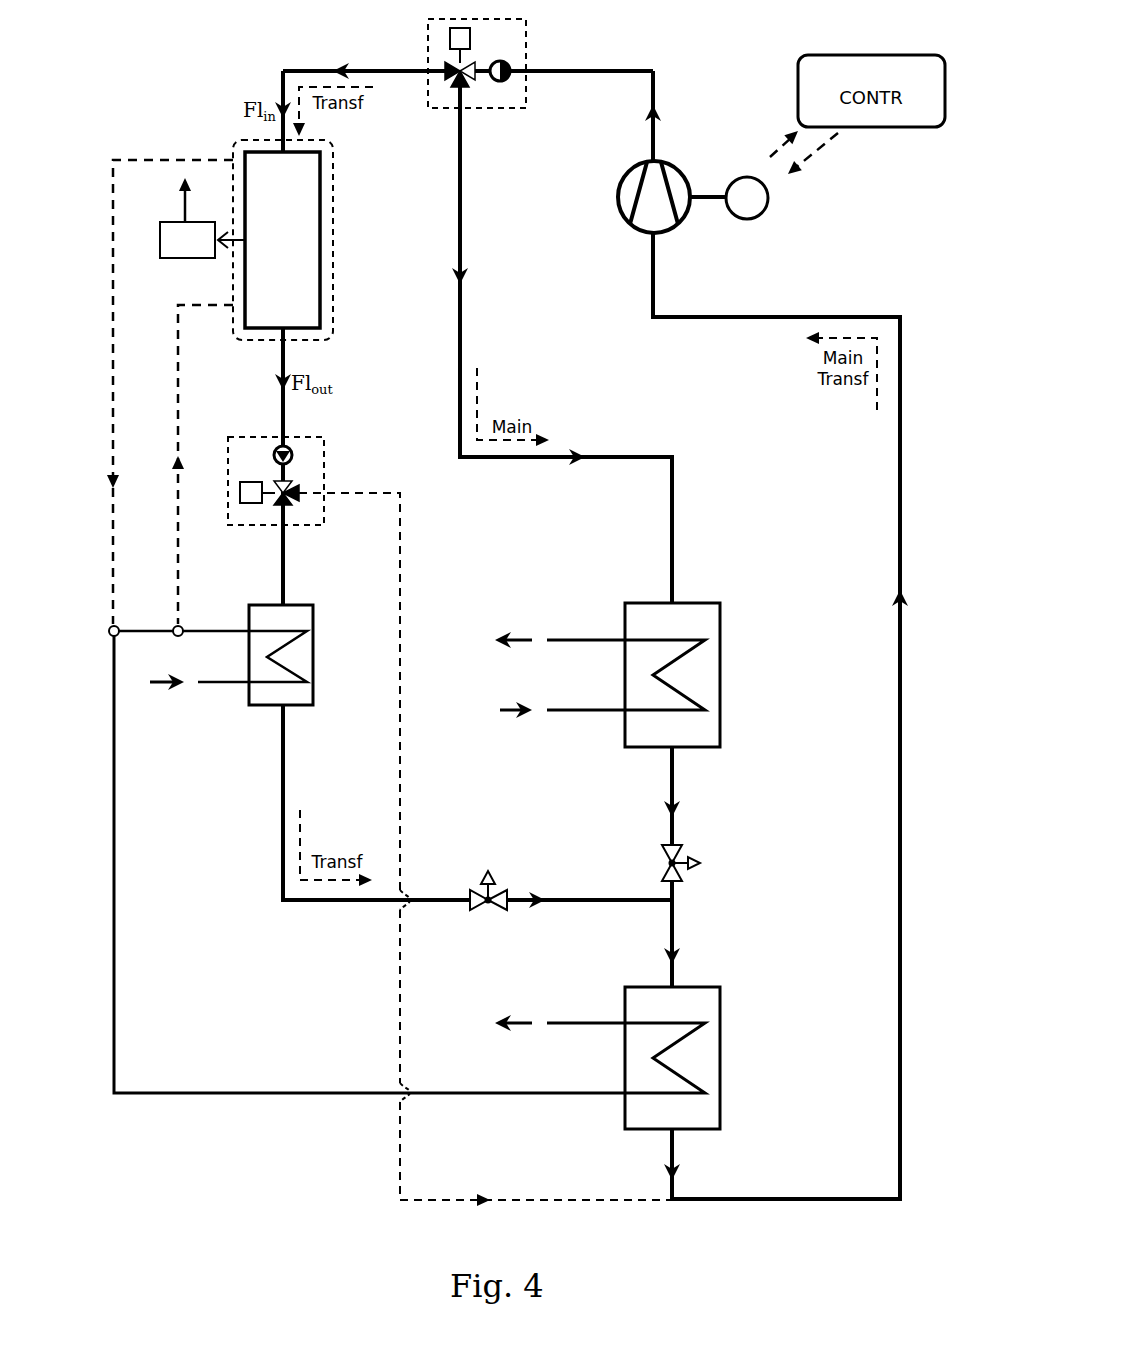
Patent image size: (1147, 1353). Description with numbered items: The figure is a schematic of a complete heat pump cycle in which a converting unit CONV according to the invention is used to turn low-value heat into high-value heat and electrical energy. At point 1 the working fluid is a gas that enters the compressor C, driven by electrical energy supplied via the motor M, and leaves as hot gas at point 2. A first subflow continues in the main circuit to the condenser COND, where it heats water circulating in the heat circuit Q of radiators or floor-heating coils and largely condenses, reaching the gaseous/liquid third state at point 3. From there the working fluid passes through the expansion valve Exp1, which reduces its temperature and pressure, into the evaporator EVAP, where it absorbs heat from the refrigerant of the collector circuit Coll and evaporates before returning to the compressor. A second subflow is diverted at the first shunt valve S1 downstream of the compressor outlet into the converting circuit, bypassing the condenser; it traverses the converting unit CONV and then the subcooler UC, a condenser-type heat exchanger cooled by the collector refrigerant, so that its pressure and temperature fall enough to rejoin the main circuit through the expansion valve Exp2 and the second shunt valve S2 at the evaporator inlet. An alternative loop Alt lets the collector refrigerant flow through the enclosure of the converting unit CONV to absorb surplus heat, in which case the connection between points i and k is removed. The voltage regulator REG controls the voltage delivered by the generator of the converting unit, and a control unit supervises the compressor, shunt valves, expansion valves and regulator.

The first state point 1 is at (900, 450).
The second state point 2 is at (396, 71).
The third state point 3 is at (673, 800).
The compressor C is at (620, 210).
The motor M is at (729, 198).
The first shunt valve S1 is at (446, 108).
The second shunt valve S2 is at (270, 527).
The converting unit CONV is at (283, 240).
The voltage regulator REG is at (202, 218).
The loop Alt is at (178, 340).
The subcooler UC is at (248, 706).
The expansion valve Exp1 is at (664, 855).
The expansion valve Exp2 is at (503, 897).
The condenser COND is at (720, 675).
The heat circuit Q is at (596, 710).
The evaporator EVAP is at (720, 1062).
The collector circuit Coll is at (598, 1093).